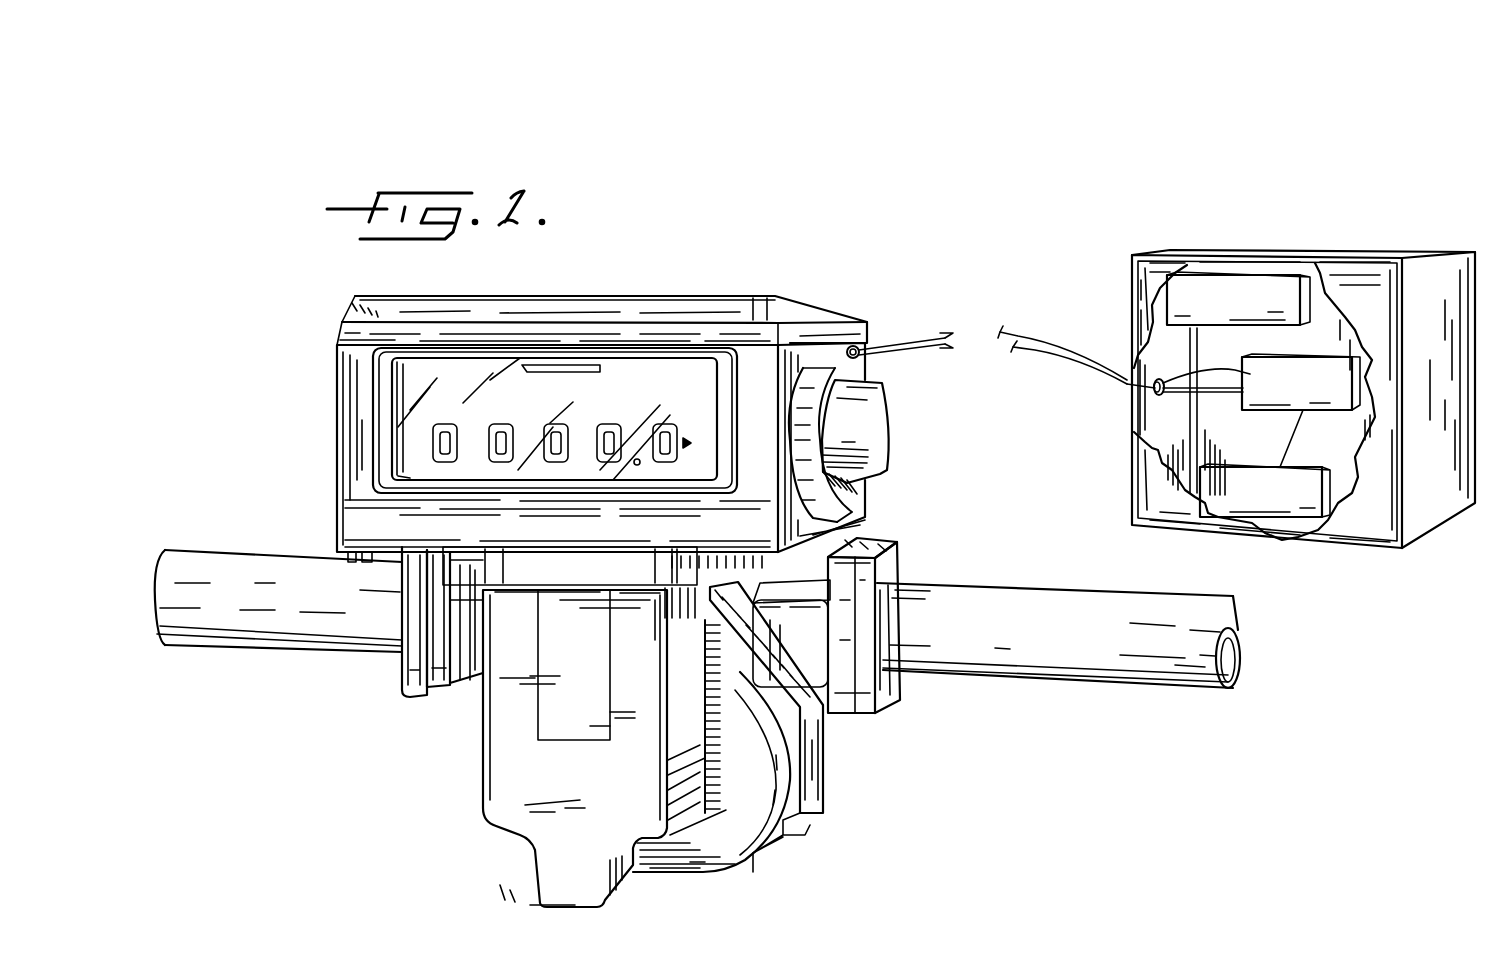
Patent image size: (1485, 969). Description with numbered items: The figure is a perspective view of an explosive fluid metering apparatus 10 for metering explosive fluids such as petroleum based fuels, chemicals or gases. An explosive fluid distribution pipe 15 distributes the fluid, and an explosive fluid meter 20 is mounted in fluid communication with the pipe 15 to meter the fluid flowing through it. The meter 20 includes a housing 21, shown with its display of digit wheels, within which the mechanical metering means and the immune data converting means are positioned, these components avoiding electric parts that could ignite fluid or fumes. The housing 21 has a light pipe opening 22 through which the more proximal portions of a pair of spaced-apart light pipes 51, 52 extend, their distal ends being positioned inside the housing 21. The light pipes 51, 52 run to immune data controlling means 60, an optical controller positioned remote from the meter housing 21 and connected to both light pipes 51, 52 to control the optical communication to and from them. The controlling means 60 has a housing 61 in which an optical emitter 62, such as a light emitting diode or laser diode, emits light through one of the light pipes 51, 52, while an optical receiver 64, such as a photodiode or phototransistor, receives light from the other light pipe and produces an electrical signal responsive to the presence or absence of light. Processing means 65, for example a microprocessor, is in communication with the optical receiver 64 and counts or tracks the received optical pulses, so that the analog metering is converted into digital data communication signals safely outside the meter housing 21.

The explosive fluid metering apparatus 10 is at (810, 258).
The explosive fluid distribution pipe 15 is at (380, 630).
The explosive fluid meter 20 is at (295, 463).
The housing 21 is at (333, 387).
The light pipe opening 22 is at (863, 347).
The light pipe 51 is at (930, 337).
The light pipe 52 is at (937, 350).
The immune data controlling means 60 is at (1368, 212).
The housing 61 is at (1460, 268).
The optical emitter 62 is at (1213, 282).
The optical receiver 64 is at (1158, 395).
The processing means 65 is at (1280, 510).